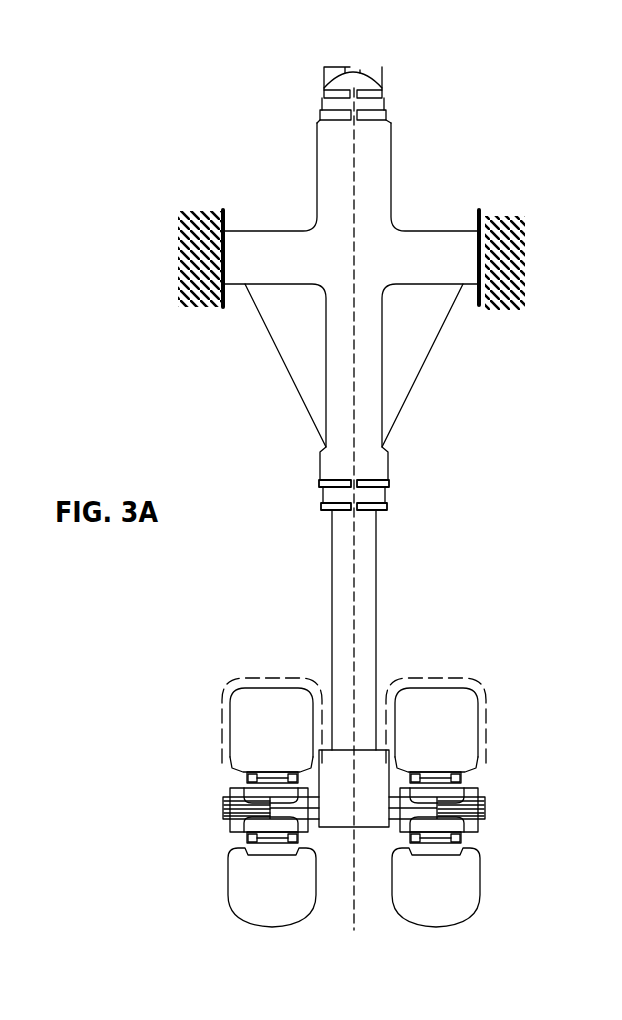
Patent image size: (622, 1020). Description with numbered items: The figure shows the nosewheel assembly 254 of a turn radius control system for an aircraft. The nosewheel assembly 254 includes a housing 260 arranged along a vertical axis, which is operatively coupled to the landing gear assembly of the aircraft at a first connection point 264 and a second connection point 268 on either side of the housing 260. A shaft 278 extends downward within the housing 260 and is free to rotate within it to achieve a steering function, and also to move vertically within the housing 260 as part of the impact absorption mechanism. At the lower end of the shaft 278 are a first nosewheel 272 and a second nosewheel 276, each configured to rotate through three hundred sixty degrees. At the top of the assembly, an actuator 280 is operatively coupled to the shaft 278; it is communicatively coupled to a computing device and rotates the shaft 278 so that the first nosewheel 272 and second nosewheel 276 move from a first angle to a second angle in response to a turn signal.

The nosewheel assembly 254 is at (144, 57).
The housing 260 is at (376, 241).
The first connection point 264 is at (210, 222).
The second connection point 268 is at (507, 222).
The first nosewheel 272 is at (247, 707).
The second nosewheel 276 is at (458, 707).
The shaft 278 is at (373, 592).
The actuator 280 is at (335, 82).